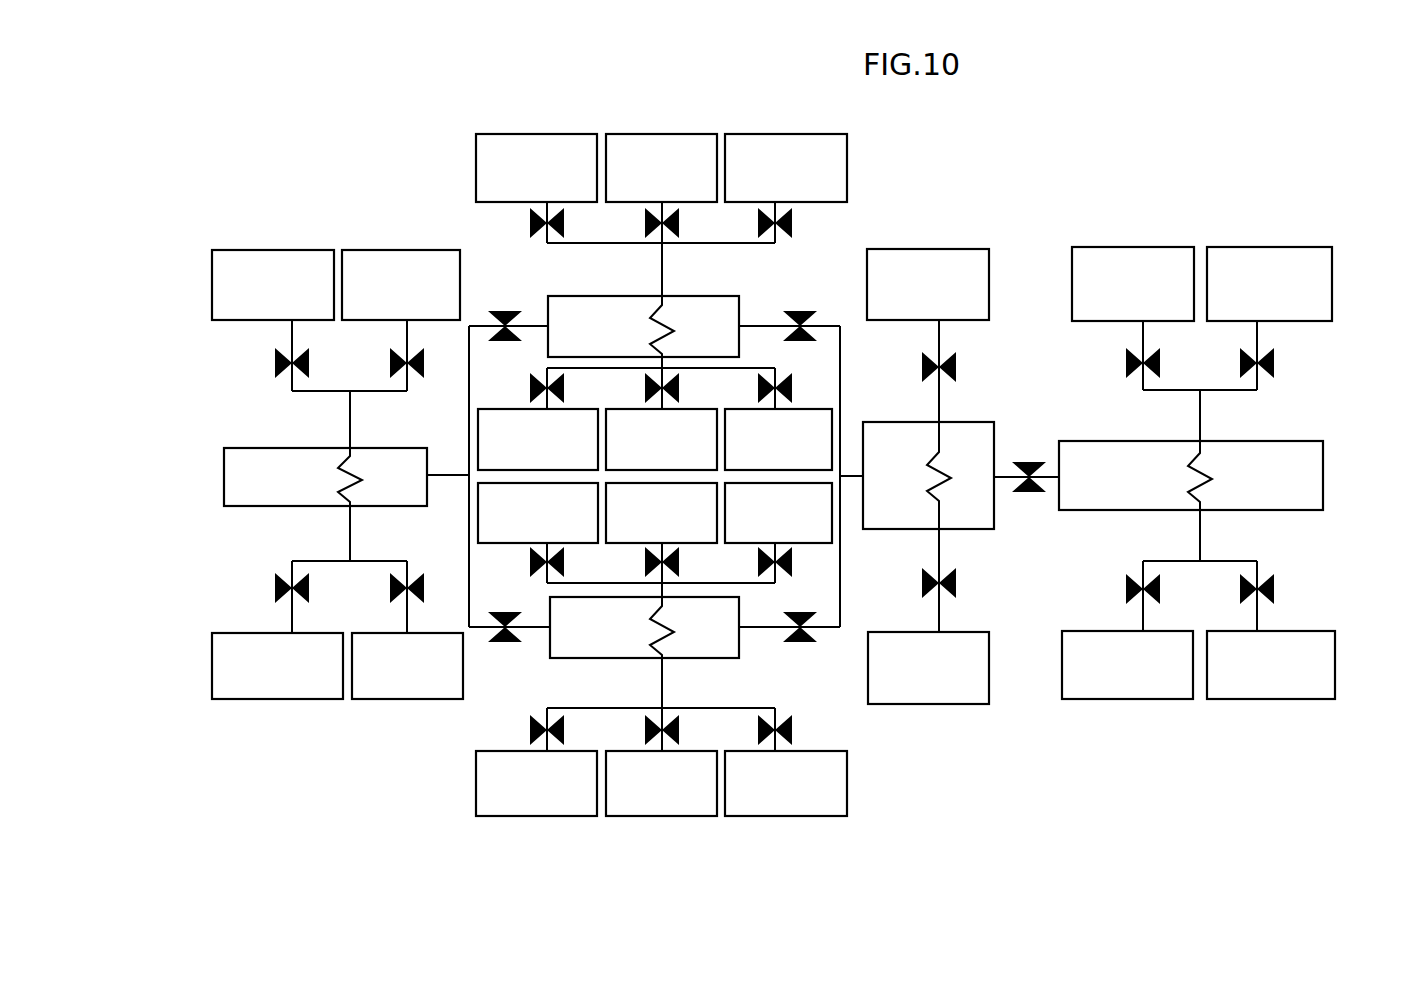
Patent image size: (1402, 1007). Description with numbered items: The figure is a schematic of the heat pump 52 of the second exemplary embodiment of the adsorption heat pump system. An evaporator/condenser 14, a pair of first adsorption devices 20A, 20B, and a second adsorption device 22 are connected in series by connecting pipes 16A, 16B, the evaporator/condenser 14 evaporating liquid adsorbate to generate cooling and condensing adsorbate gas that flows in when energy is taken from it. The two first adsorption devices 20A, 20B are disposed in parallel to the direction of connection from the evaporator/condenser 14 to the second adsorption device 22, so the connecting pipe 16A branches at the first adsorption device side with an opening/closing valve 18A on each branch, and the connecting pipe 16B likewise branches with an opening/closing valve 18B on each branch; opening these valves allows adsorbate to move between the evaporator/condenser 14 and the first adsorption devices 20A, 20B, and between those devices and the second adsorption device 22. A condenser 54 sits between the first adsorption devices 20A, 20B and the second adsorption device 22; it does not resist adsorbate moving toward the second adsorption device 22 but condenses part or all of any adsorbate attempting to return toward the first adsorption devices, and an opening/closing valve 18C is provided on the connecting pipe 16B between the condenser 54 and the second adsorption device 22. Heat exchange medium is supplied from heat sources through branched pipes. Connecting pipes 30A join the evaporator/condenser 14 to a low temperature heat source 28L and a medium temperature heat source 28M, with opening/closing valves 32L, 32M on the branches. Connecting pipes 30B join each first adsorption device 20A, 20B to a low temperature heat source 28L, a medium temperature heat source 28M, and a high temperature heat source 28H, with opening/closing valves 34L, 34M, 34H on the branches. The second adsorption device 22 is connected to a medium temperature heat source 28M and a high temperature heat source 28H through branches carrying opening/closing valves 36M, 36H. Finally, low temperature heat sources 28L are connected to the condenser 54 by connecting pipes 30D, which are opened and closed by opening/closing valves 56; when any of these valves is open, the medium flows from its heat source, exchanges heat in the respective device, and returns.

The evaporator/condenser 14 is at (296, 485).
The connecting pipe 16A is at (626, 476).
The connecting pipe 16B is at (863, 539).
The opening/closing valve 18A is at (485, 480).
The opening/closing valve 18B is at (817, 470).
The opening/closing valve 18C is at (1026, 508).
The first adsorption device 20A is at (627, 647).
The first adsorption device 20B is at (623, 314).
The second adsorption device 22 is at (1196, 495).
The low temperature heat source 28L is at (598, 467).
The medium temperature heat source 28M is at (768, 467).
The high temperature heat source 28H is at (1019, 467).
The connecting pipe 30A is at (334, 476).
The connecting pipe 30B is at (720, 510).
The connecting pipe 30D is at (939, 476).
The opening/closing valve 32L is at (251, 475).
The opening/closing valve 32M is at (370, 477).
The opening/closing valve 34L is at (502, 478).
The opening/closing valve 34M is at (617, 476).
The opening/closing valve 34H is at (738, 476).
The opening/closing valve 36M is at (1095, 476).
The opening/closing valve 36H is at (1291, 476).
The heat pump 52 is at (1261, 476).
The condenser 54 is at (945, 447).
The opening/closing valve 56 is at (981, 474).